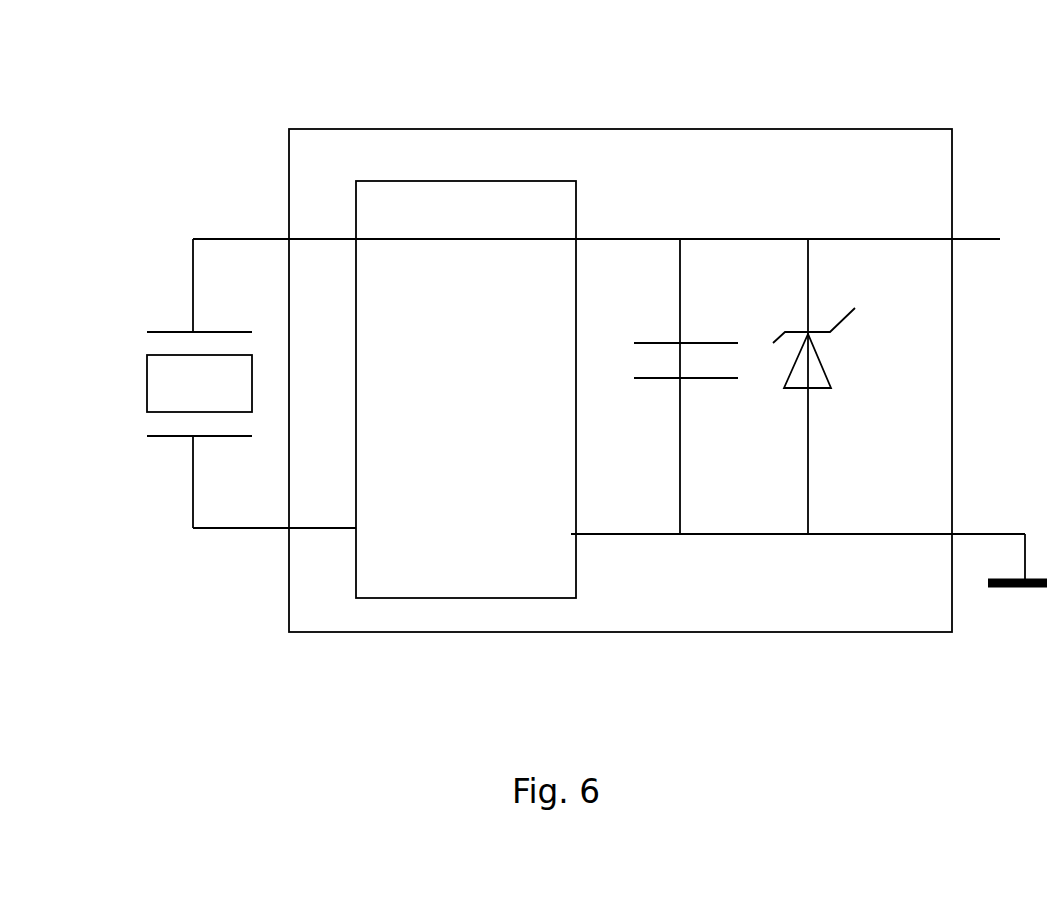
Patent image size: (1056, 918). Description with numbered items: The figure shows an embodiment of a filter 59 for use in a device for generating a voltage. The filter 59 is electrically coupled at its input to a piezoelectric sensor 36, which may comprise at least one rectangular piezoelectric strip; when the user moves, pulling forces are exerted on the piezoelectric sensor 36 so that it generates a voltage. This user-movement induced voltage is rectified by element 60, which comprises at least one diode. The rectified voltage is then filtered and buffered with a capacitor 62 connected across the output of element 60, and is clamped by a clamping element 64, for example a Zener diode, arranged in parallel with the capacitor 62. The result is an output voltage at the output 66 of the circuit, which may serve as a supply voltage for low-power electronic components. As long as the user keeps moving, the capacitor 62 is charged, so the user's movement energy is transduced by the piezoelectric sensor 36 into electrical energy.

The filter 59 is at (421, 126).
The rectifying element 60 is at (467, 336).
The piezoelectric sensor 36 is at (136, 378).
The capacitor 62 is at (659, 342).
The clamping element 64 is at (803, 398).
The output 66 is at (976, 237).